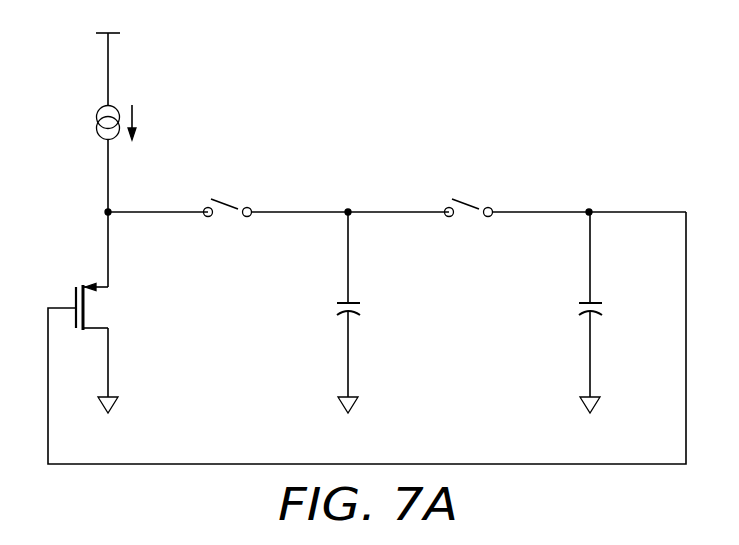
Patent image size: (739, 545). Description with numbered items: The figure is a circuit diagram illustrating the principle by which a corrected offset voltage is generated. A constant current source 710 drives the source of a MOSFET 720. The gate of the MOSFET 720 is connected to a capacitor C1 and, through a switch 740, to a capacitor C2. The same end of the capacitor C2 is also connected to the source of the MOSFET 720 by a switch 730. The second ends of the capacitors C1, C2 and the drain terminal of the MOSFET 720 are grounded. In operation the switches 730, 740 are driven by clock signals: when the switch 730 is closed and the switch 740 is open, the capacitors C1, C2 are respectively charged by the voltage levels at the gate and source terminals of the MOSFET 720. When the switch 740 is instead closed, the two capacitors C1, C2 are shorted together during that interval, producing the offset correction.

The constant current source 710 is at (97, 117).
The MOSFET 720 is at (74, 297).
The switch 730 is at (226, 199).
The switch 740 is at (467, 199).
The capacitor C1 is at (608, 312).
The capacitor C2 is at (366, 312).